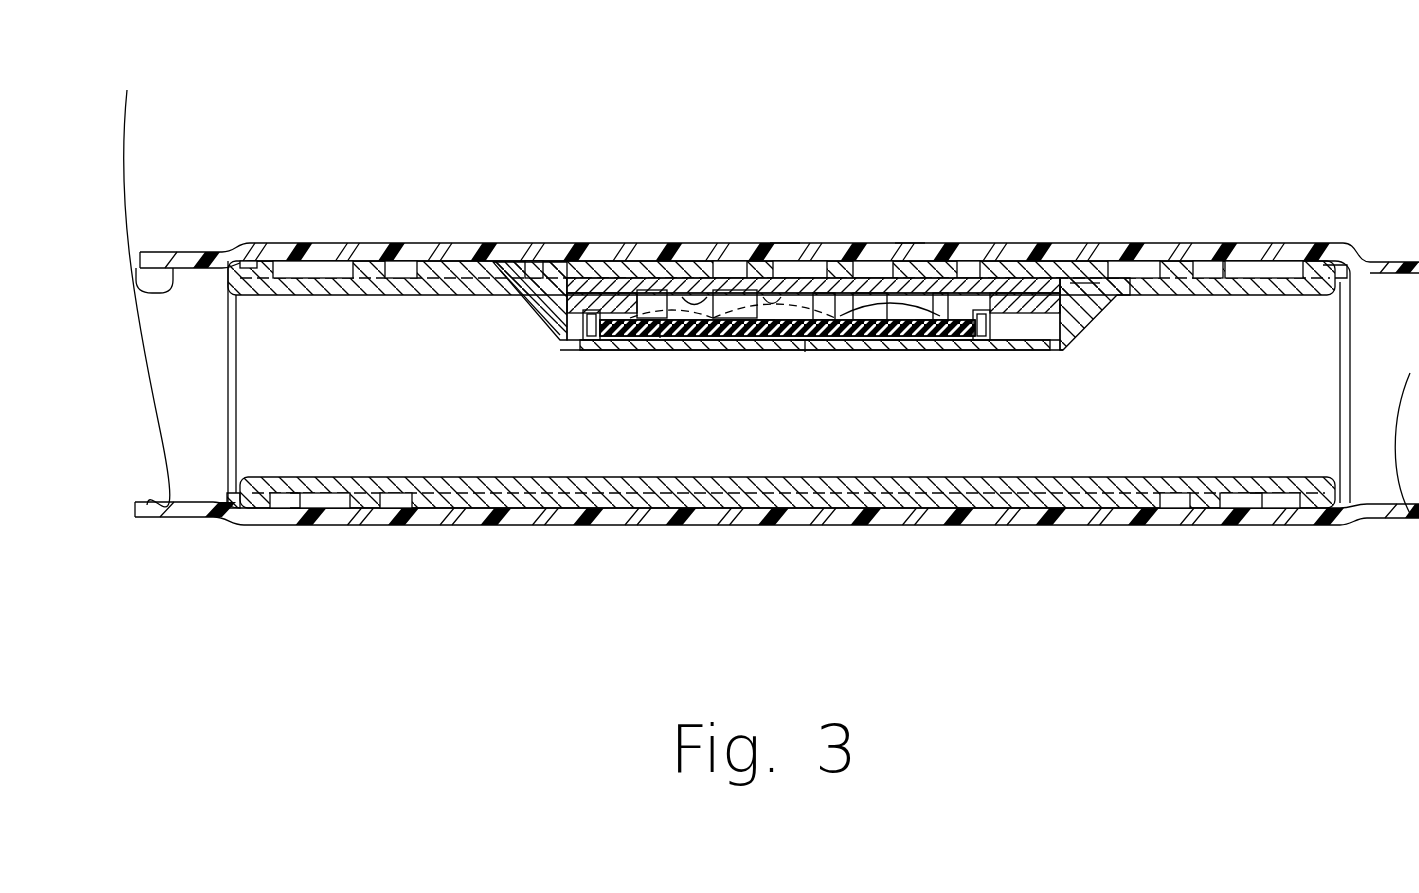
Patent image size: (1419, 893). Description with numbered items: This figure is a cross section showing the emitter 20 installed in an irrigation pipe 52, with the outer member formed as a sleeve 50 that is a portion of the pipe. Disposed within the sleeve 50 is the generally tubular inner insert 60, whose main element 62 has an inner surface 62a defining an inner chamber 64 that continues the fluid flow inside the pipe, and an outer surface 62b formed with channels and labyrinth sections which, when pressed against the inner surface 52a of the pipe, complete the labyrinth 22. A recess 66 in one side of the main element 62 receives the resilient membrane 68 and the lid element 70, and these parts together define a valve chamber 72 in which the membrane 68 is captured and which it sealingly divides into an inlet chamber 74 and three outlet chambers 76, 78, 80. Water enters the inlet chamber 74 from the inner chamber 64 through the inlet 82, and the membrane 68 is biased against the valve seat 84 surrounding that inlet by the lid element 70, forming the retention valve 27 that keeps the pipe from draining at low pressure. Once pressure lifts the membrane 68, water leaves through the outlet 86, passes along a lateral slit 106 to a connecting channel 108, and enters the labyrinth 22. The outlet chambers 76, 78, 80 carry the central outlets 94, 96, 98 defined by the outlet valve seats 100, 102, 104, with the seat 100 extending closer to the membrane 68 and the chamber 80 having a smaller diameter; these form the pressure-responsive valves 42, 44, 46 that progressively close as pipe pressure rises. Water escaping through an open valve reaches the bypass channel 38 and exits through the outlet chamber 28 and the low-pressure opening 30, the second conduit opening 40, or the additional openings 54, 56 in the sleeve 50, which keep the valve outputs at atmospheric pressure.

The emitter 20 is at (405, 190).
The labyrinth 22 is at (742, 510).
The retention valve 27 is at (803, 358).
The outlet chamber 28 is at (1239, 260).
The opening 30 is at (1268, 260).
The bypass channel 38 is at (550, 287).
The second conduit opening 40 is at (320, 261).
The first valve 42 is at (883, 256).
The valve 44 is at (786, 242).
The valve 46 is at (669, 258).
The sleeve 50 is at (658, 275).
The irrigation pipe 52 is at (199, 251).
The inner surface of conduit 52a is at (165, 284).
The opening 54 is at (1258, 525).
The opening 56 is at (296, 511).
The inner insert 60 is at (358, 304).
The main element 62 is at (517, 306).
The inner surface 62a is at (427, 295).
The outer surface 62b is at (405, 248).
The inner chamber 64 is at (300, 400).
The recess 66 is at (1040, 340).
The membrane 68 is at (684, 337).
The lid element 70 is at (617, 300).
The valve chamber 72 is at (957, 345).
The inlet chamber 74 is at (886, 352).
The outlet chamber 76 is at (923, 323).
The outlet chamber 78 is at (742, 305).
The outlet chamber 80 is at (650, 305).
The inlet 82 is at (766, 312).
The valve seat 84 is at (812, 340).
The outlet 86 is at (982, 330).
The central outlet 94 is at (910, 244).
The central outlet 96 is at (772, 294).
The central outlet 98 is at (626, 270).
The outlet valve seat 100 is at (913, 298).
The outlet valve seat 102 is at (795, 303).
The outlet valve seat 104 is at (698, 300).
The lateral slit 106 is at (1057, 290).
The connecting channel 108 is at (1083, 275).